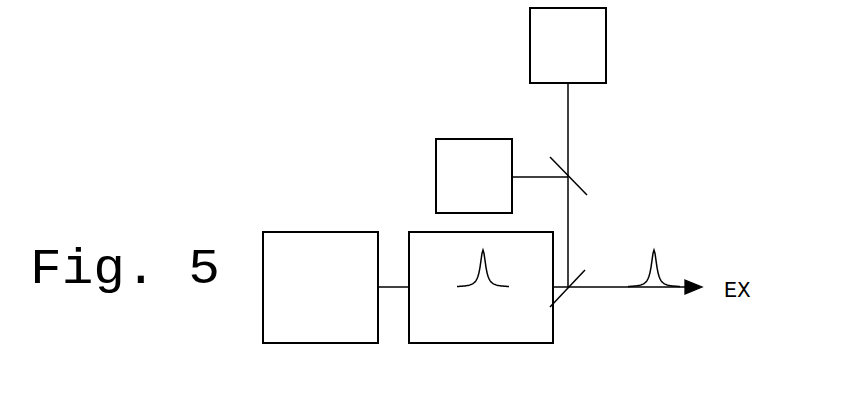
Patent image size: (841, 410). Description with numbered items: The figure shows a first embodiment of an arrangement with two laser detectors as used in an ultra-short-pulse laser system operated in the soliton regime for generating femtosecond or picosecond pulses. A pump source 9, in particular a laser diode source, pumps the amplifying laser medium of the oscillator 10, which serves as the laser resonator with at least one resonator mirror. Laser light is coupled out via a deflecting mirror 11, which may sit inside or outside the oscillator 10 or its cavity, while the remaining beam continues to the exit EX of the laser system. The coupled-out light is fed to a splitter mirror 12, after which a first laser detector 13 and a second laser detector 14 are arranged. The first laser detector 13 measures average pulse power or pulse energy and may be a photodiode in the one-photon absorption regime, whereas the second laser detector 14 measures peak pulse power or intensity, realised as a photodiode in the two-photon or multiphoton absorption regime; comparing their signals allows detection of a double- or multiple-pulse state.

The pump source 9 is at (332, 314).
The oscillator 10 is at (494, 314).
The deflecting mirror 11 is at (612, 312).
The splitter mirror 12 is at (621, 173).
The first laser detector 13 is at (432, 163).
The second laser detector 14 is at (517, 45).